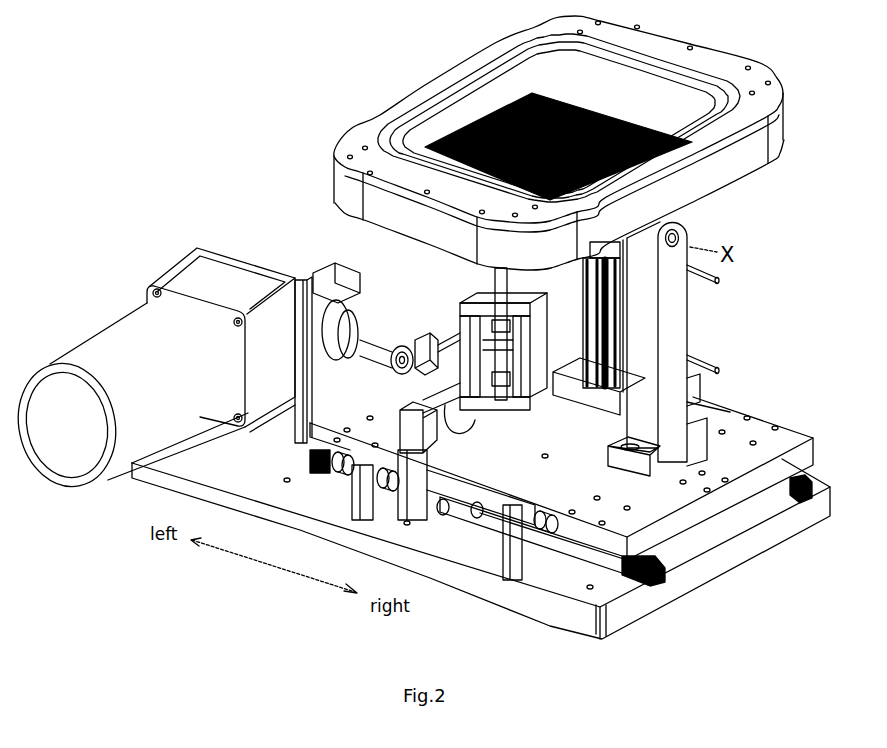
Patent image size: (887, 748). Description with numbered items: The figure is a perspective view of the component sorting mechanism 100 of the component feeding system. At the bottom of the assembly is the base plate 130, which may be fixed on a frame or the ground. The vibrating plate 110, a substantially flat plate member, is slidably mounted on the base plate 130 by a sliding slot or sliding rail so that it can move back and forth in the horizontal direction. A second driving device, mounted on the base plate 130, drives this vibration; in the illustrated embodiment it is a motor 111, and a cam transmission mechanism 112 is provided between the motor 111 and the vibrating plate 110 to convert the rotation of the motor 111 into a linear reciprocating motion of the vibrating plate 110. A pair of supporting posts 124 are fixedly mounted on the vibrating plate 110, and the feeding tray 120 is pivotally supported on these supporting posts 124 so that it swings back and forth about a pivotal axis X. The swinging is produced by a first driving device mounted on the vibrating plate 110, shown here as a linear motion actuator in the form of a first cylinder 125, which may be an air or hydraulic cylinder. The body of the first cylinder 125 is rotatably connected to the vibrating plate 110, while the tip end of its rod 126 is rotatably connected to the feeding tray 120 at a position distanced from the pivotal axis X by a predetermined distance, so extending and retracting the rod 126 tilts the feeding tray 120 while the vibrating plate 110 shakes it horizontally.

The component sorting mechanism 100 is at (298, 125).
The vibrating plate 110 is at (752, 428).
The motor 111 is at (125, 350).
The cam transmission mechanism 112 is at (350, 283).
The feeding tray 120 is at (712, 68).
The supporting posts 124 is at (463, 348).
The first cylinder 125 is at (410, 312).
The rod 126 is at (507, 290).
The base plate 130 is at (736, 552).